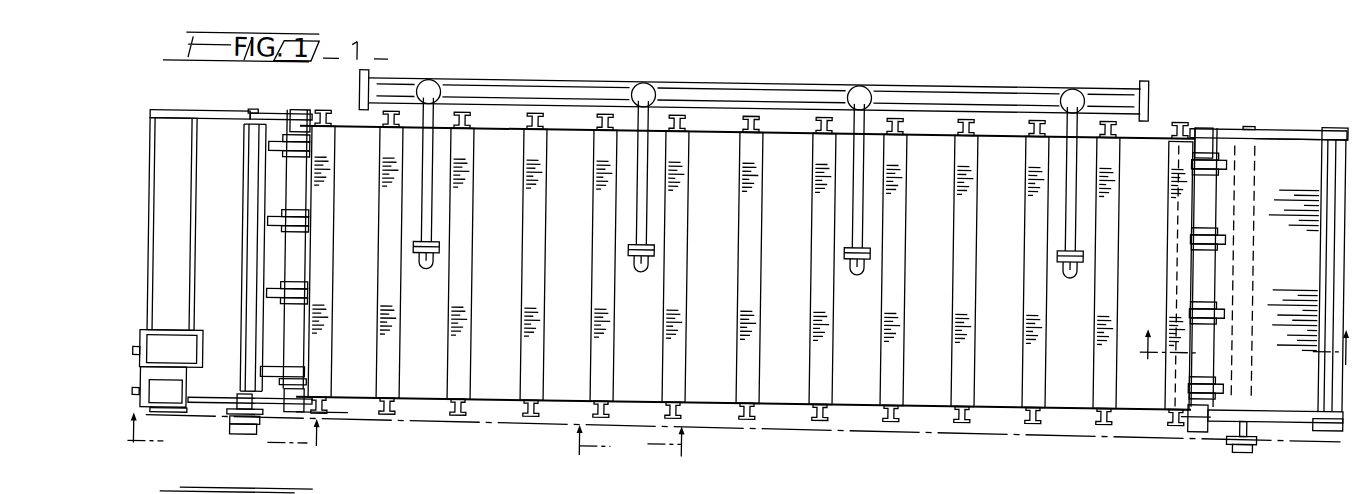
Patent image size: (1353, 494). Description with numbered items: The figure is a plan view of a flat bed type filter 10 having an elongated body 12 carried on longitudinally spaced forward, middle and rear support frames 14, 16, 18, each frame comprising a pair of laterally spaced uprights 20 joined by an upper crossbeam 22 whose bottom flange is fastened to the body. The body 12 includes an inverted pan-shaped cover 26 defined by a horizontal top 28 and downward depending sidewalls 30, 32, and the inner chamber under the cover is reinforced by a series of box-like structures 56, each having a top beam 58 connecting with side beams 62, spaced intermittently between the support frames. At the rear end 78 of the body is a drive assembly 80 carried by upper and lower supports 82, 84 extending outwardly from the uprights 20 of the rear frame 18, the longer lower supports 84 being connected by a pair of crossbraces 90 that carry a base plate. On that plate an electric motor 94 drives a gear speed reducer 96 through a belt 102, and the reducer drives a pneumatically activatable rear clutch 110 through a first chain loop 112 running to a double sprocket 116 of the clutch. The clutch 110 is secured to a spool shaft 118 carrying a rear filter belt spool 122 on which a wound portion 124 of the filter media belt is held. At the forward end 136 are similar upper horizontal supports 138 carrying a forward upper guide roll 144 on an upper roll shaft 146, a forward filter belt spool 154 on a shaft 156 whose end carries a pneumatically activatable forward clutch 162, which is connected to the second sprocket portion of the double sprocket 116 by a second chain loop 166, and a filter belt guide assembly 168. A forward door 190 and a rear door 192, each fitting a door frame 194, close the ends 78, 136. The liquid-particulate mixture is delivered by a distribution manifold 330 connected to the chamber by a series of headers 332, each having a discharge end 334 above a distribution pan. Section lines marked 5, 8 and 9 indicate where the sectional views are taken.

The flat bed type filter 10 is at (745, 271).
The elongated body 12 is at (1079, 400).
The forward support frame 14 is at (1162, 397).
The middle support frame 16 is at (738, 382).
The rear support frame 18 is at (335, 141).
The uprights 20 is at (323, 111).
The upper crossbeam 22 is at (329, 250).
The cover 26 is at (503, 327).
The horizontal top 28 is at (493, 390).
The cover sidewall 30 is at (433, 400).
The cover sidewall 32 is at (507, 127).
The box-like structures 56 is at (1023, 355).
The top beam 58 is at (960, 383).
The side beams 62 is at (606, 111).
The rear end 78 is at (205, 196).
The drive assembly 80 is at (208, 335).
The upper supports 82 is at (232, 122).
The lower supports 84 is at (170, 113).
The crossbraces 90 is at (193, 250).
The electric motor 94 is at (160, 336).
The gear speed reducer 96 is at (160, 411).
The belt 102 is at (150, 376).
The rear clutch 110 is at (243, 433).
The first chain loop 112 is at (219, 418).
The double sprocket 116 is at (264, 418).
The spool shaft 118 is at (253, 111).
The rear filter belt spool 122 is at (247, 245).
The wound portion 124 is at (246, 272).
The forward end 136 is at (1243, 150).
The upper horizontal supports 138 is at (1307, 117).
The forward upper guide roll 144 is at (1323, 390).
The upper roll shaft 146 is at (1337, 114).
The forward filter belt spool 154 is at (1250, 262).
The shaft 156 is at (1253, 420).
The forward clutch 162 is at (1202, 420).
The second chain loop 166 is at (1004, 425).
The filter belt guide assembly 168 is at (1268, 163).
The forward door 190 is at (1228, 145).
The rear door 192 is at (271, 136).
The door frame 194 is at (309, 410).
The distribution manifold 330 is at (489, 78).
The headers 332 is at (434, 203).
The discharge end 334 is at (434, 256).
The section line 5- 5 is at (1239, 352).
The section line 8- 8 is at (229, 440).
The section line 9- 9 is at (624, 446).